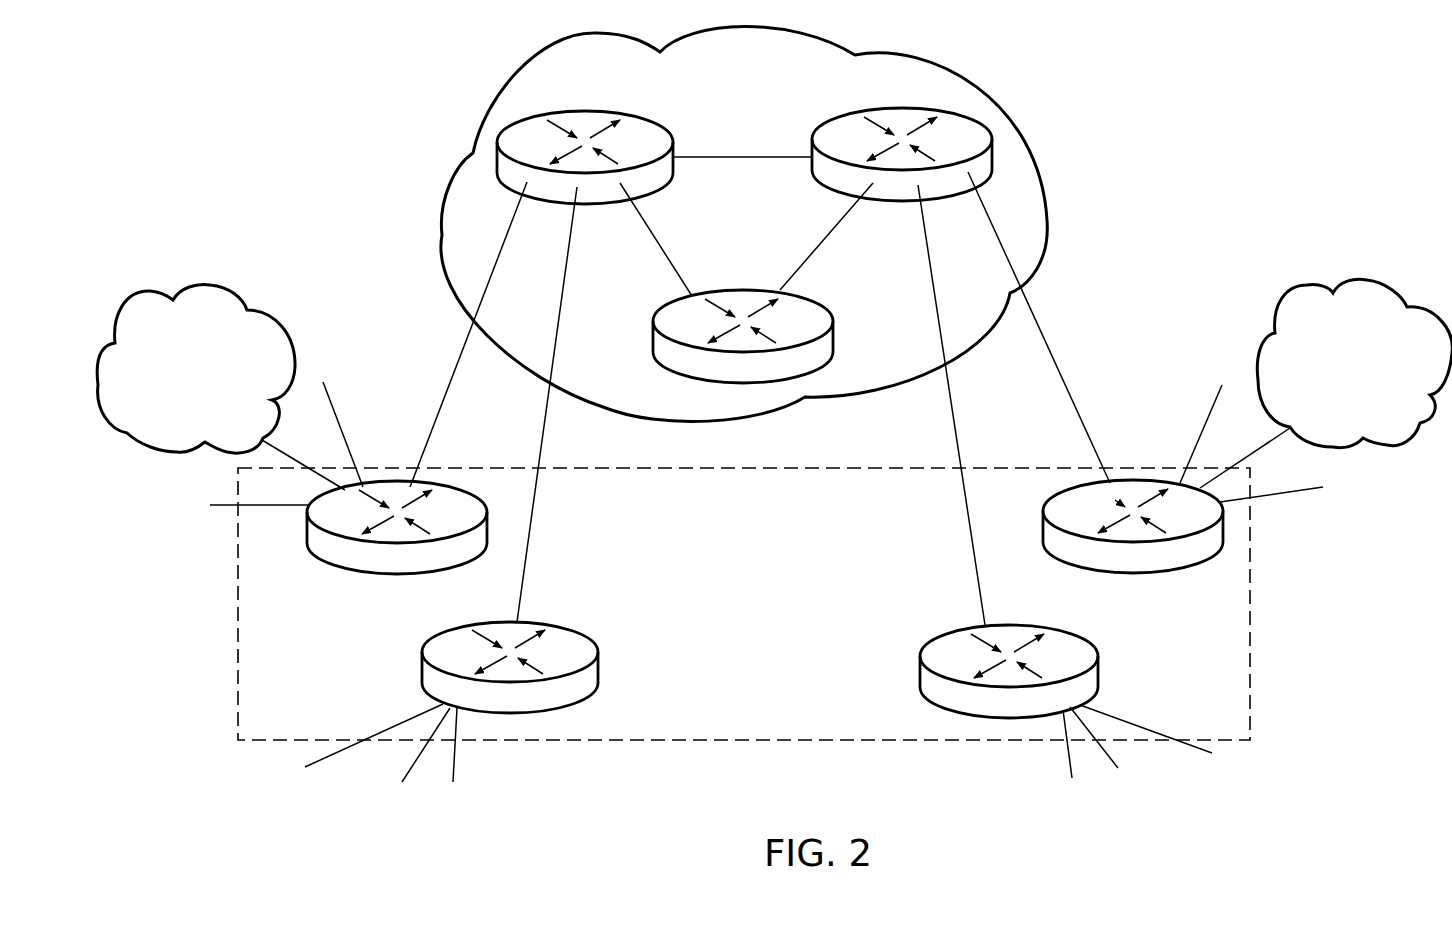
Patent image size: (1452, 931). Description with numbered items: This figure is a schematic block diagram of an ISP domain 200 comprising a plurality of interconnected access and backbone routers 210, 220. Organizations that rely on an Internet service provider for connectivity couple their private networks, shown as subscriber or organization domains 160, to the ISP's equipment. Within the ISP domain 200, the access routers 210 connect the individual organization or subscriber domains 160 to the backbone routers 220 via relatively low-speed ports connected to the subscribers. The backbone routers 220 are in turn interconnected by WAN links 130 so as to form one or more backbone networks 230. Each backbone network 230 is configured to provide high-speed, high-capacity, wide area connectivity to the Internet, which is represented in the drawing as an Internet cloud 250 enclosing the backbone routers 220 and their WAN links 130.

The WAN link 130 is at (741, 156).
The organization domain 160 is at (774, 366).
The ISP domain 200 is at (744, 604).
The access router 210 is at (440, 575).
The backbone router 220 is at (605, 108).
The backbone network 230 is at (707, 233).
The Internet cloud 250 is at (744, 223).